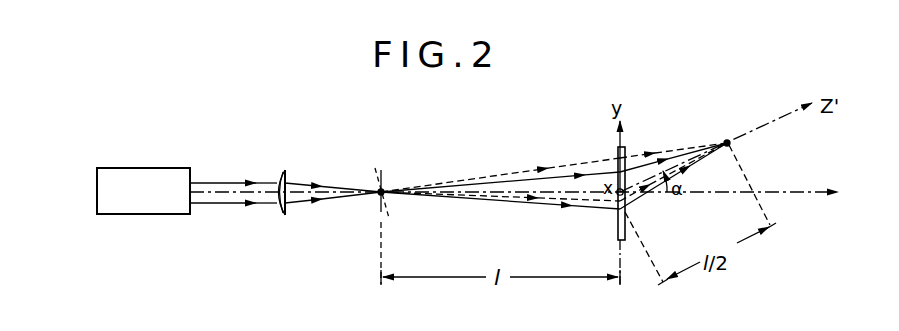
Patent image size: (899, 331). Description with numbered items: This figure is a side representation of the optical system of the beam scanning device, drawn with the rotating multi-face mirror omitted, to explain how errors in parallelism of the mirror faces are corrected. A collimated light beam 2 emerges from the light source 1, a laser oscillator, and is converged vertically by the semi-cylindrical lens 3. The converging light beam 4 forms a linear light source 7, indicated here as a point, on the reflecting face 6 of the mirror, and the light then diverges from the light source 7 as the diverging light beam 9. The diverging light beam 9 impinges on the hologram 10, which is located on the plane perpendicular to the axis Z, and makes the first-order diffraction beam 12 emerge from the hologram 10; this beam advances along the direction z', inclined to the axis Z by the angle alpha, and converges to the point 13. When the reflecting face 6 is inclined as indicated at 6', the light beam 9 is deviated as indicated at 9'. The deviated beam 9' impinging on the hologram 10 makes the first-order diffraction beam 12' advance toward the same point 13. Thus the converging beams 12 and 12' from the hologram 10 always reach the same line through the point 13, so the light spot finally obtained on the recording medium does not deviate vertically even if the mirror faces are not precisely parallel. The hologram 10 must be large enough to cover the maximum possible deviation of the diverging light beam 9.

The light source 1 is at (150, 178).
The collimated light beam 2 is at (232, 183).
The semi-cylindrical lens 3 is at (282, 172).
The vertically converged light beam 4 is at (306, 183).
The reflecting face 6 is at (390, 179).
The inclined reflecting face 6' is at (368, 182).
The linear light source 7 is at (378, 197).
The diverging light beam 9 is at (500, 170).
The deviated light beam 9' is at (500, 168).
The hologram 10 is at (626, 150).
The first-order diffraction beam 12 is at (673, 165).
The deviated first-order diffraction beam 12' is at (673, 150).
The convergence point 13 is at (729, 140).
The axis z Z is at (528, 193).